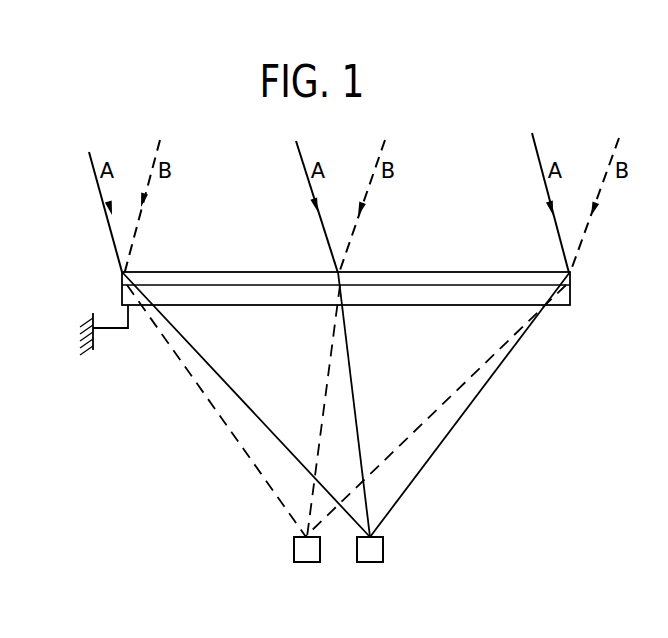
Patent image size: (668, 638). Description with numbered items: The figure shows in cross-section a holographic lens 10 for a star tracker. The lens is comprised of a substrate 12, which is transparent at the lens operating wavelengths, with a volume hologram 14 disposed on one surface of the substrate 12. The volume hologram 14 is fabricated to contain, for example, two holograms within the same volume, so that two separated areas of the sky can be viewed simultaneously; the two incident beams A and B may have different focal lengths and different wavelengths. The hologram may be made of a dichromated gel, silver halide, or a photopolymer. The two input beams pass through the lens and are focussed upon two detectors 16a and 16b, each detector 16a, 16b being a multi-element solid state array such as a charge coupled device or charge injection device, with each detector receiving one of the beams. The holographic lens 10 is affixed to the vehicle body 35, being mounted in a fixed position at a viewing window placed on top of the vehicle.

The holographic lens 10 is at (140, 439).
The substrate 12 is at (572, 298).
The volume hologram 14 is at (573, 281).
The vehicle body 35 is at (93, 347).
The detector 16a is at (305, 563).
The detector 16b is at (368, 563).